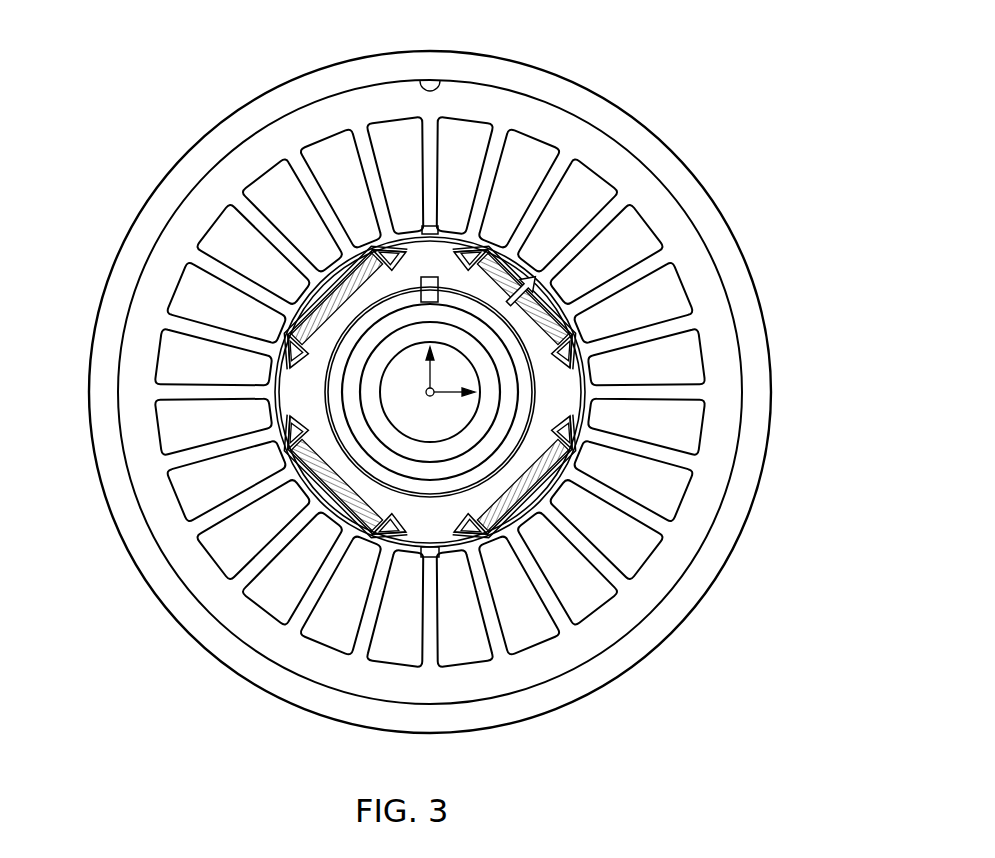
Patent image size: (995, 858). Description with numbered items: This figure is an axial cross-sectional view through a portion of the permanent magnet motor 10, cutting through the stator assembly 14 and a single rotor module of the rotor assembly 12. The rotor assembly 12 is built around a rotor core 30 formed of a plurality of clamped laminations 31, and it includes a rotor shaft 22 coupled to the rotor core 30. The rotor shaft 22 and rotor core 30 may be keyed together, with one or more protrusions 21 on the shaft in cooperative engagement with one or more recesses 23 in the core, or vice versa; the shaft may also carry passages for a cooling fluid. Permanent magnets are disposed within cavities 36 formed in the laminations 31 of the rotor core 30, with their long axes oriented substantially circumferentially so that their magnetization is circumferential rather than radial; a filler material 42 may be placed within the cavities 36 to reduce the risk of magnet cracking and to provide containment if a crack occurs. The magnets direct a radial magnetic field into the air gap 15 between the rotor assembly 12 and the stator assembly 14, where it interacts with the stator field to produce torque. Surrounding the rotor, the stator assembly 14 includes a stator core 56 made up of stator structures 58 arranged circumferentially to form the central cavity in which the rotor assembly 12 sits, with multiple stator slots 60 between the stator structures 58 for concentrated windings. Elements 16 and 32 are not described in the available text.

The permanent magnet motor 10 is at (134, 70).
The rotor assembly 12 is at (420, 532).
The stator assembly 14 is at (688, 545).
The air gap 15 is at (337, 257).
The housing 16 is at (722, 237).
The protrusion 21 is at (437, 262).
The rotor shaft 22 is at (335, 395).
The recess 23 is at (430, 80).
The rotor core 30 is at (418, 257).
The clamped laminations 31 is at (447, 532).
The permanent magnet 32 is at (287, 410).
The cavity 36 is at (579, 459).
The filler material 42 is at (573, 392).
The stator core 56 is at (375, 117).
The stator structure 58 is at (605, 195).
The stator slot 60 is at (228, 237).